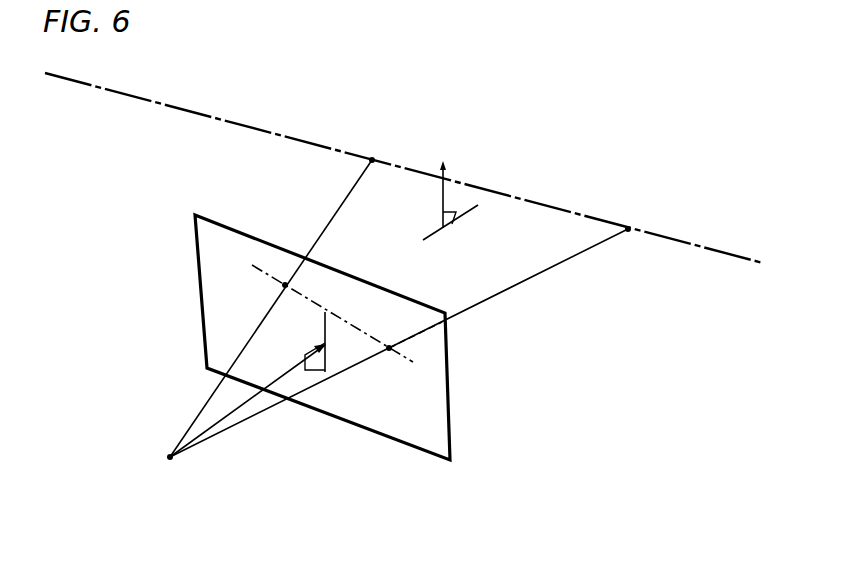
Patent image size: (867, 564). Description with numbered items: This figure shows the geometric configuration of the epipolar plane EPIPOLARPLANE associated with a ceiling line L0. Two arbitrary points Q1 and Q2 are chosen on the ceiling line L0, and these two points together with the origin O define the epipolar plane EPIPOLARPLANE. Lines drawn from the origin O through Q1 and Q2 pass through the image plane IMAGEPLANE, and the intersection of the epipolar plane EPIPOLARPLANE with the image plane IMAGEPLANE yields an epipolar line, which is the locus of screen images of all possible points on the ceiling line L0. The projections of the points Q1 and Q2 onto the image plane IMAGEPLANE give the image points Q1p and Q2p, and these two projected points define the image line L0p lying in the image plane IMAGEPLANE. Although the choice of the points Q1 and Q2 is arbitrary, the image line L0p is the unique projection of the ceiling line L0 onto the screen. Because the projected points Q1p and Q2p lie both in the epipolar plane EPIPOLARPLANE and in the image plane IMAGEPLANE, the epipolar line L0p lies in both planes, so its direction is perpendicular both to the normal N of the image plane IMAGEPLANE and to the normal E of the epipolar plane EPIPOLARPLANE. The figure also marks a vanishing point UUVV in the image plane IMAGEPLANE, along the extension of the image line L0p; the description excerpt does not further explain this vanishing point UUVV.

The ceiling line L0 is at (404, 167).
The point Q1 is at (282, 298).
The point Q2 is at (408, 331).
The normal of the epipolar plane E is at (450, 191).
The image plane IMAGEPLANE is at (452, 448).
The epipolar plane EPIPOLARPLANE is at (538, 252).
The image line LO' L0p is at (317, 304).
The projection Q1' Q1p is at (302, 282).
The projection Q2' Q2p is at (409, 336).
The vanishing point [UU,VV] UUVV is at (413, 362).
The normal of the image plane N is at (248, 384).
The origin O is at (160, 464).